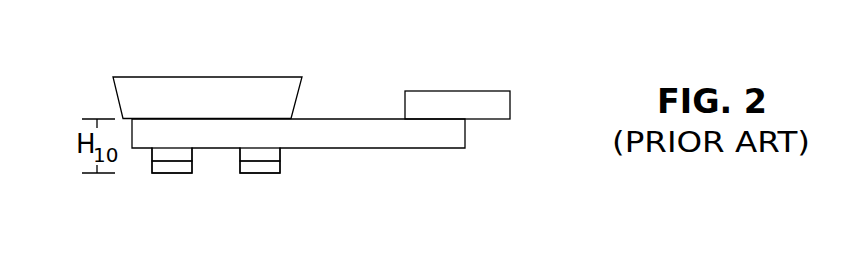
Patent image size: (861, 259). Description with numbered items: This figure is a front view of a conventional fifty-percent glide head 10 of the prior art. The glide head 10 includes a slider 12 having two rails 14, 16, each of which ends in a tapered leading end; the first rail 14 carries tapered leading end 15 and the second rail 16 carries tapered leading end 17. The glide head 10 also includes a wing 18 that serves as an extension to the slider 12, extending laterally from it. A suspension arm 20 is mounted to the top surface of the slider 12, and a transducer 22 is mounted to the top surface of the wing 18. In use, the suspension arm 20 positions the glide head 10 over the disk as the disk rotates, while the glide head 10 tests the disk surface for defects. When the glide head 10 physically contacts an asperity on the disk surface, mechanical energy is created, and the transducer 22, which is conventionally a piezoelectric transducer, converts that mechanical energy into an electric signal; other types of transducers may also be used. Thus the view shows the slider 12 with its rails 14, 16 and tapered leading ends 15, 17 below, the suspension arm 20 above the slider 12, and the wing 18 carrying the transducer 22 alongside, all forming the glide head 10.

The glide head 10 is at (338, 71).
The slider 12 is at (298, 192).
The rail 14 is at (169, 194).
The tapered leading end 15 is at (171, 167).
The rail 16 is at (262, 194).
The tapered leading end 17 is at (259, 167).
The wing 18 is at (413, 133).
The suspension arm 20 is at (205, 90).
The transducer 22 is at (453, 105).